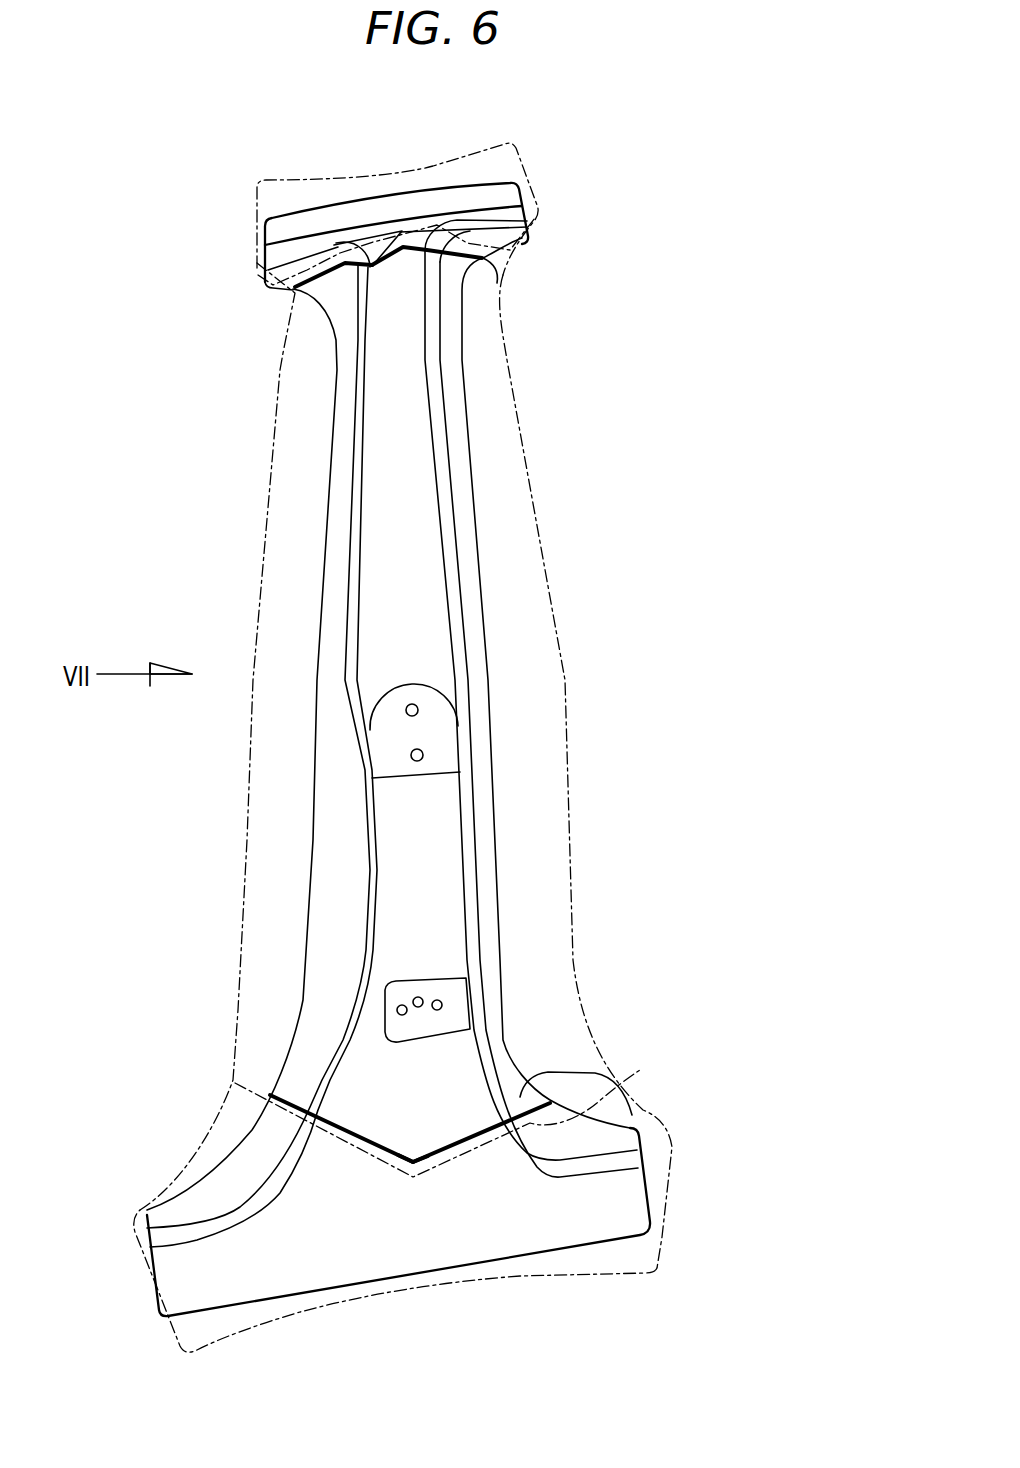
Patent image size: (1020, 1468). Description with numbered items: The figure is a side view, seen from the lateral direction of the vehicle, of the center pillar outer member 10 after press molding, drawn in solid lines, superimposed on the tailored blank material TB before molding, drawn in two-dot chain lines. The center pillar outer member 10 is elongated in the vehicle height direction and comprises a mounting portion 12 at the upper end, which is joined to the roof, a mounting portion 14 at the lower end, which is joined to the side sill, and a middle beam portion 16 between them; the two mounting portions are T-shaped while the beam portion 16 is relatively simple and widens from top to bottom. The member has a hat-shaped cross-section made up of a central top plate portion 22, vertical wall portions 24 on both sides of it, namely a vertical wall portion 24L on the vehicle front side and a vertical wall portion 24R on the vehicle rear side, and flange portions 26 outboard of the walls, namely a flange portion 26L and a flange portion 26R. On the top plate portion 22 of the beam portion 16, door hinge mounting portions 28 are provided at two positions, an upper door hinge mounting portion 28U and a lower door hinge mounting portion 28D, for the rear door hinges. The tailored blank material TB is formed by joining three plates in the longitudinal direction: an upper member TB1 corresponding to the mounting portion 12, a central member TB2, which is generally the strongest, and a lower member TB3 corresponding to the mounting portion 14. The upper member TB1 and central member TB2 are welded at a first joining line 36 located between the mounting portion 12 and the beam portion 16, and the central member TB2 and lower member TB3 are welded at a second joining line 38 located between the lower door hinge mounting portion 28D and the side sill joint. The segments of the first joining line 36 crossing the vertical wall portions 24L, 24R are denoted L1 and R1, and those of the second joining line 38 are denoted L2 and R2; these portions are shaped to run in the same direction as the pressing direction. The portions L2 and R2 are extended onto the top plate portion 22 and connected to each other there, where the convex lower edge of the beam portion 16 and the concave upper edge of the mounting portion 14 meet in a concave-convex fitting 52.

The center pillar outer member 10 is at (478, 497).
The mounting portion at the upper end 12 is at (363, 213).
The mounting portion at the lower end 14 is at (375, 1248).
The middle beam portion 16 is at (397, 562).
The top plate portion 22 is at (415, 860).
The vertical wall portions 24 is at (403, 748).
The vertical wall portion on the vehicle front side 24L is at (355, 413).
The vertical wall portion on the vehicle rear side 24R is at (435, 377).
The flange portions 26 is at (439, 724).
The flange portion on the left side 26L is at (340, 295).
The flange portion on the right side 26R is at (448, 284).
The door hinge mounting portions 28 is at (537, 863).
The upper door hinge mounting portion 28U is at (435, 732).
The lower door hinge mounting portion 28D is at (452, 1000).
The first joining line 36 is at (497, 280).
The second joining line 38 is at (608, 1095).
The concave-convex fitting 52 is at (414, 1150).
The portion of the first joining line on the left vertical wall portion L1 is at (262, 263).
The portion of the first joining line on the right vertical wall portion R1 is at (528, 220).
The portion of the second joining line on the left vertical wall portion L2 is at (312, 1108).
The portion of the second joining line on the right vertical wall portion R2 is at (497, 1115).
The tailored blank material TB is at (427, 731).
The upper member TB1 is at (432, 167).
The central member TB2 is at (560, 604).
The lower member TB3 is at (545, 1273).